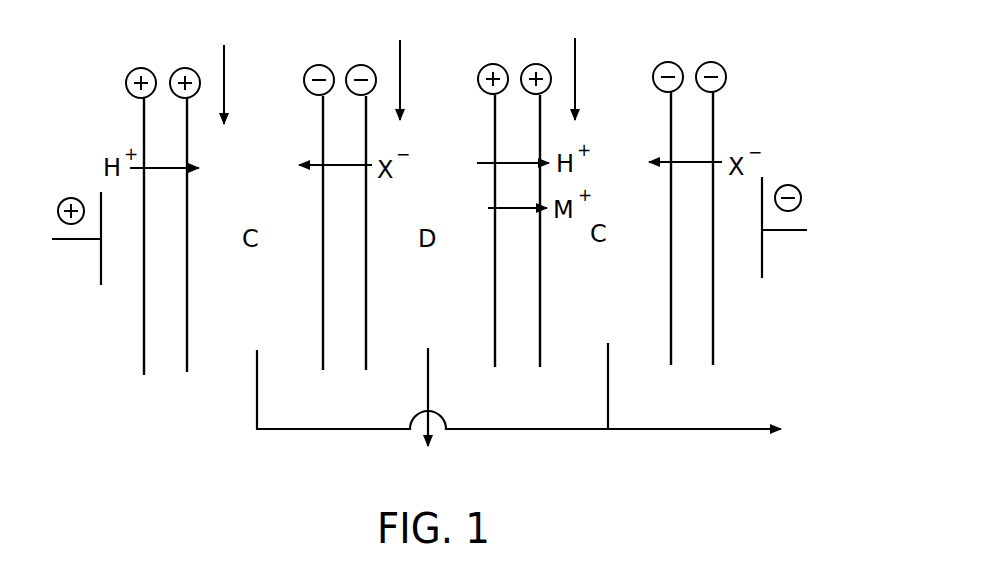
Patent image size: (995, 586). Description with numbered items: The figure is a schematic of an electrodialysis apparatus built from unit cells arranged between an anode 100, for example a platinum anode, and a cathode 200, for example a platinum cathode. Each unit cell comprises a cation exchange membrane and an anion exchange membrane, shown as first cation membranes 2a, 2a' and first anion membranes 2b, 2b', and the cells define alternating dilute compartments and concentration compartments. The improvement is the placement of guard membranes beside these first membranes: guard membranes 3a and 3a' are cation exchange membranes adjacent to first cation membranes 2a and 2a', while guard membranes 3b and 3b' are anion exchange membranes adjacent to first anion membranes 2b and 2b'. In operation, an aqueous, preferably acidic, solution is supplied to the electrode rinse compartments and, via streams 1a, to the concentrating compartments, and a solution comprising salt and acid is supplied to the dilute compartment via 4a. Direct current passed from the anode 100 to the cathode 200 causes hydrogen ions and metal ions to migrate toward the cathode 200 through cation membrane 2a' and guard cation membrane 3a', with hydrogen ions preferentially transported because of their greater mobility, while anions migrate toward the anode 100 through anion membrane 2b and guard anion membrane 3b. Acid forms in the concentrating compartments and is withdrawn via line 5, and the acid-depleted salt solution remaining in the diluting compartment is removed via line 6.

The streams 1a is at (220, 61).
The salt and acid supply stream 4a is at (402, 86).
The anode 100 is at (98, 192).
The cathode 200 is at (762, 185).
The first cation exchange membrane 2a is at (128, 221).
The guard cation exchange membrane 3a is at (206, 220).
The first anion exchange membrane 2b is at (309, 217).
The guard anion exchange membrane 3b is at (381, 217).
The first cation exchange membrane 2a' is at (479, 215).
The guard cation exchange membrane 3a' is at (557, 215).
The first anion exchange membrane 2b' is at (655, 213).
The guard anion exchange membrane 3b' is at (731, 213).
The line 5 is at (679, 431).
The line 6 is at (422, 429).